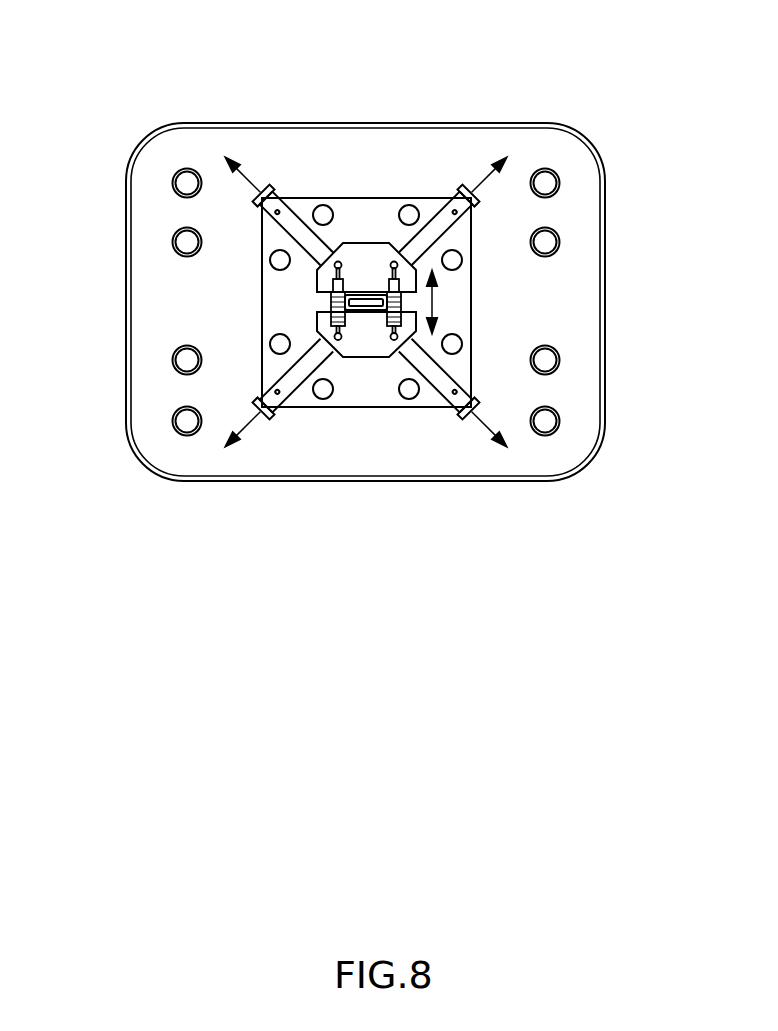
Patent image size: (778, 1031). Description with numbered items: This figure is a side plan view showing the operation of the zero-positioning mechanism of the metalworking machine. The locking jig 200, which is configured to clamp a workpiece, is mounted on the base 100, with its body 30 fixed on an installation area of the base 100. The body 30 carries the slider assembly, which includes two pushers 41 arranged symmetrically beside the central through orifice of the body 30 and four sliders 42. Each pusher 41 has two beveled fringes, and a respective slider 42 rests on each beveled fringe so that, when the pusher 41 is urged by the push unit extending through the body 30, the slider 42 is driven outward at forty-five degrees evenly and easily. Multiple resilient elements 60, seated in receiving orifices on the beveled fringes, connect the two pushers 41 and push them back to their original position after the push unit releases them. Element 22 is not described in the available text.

The base 100 is at (592, 135).
The locking jig 200 is at (255, 278).
The body 30 is at (365, 213).
The slider 42 is at (268, 195).
The connecting block 22 is at (355, 243).
The pusher 41 is at (418, 288).
The resilient element 60 is at (398, 312).